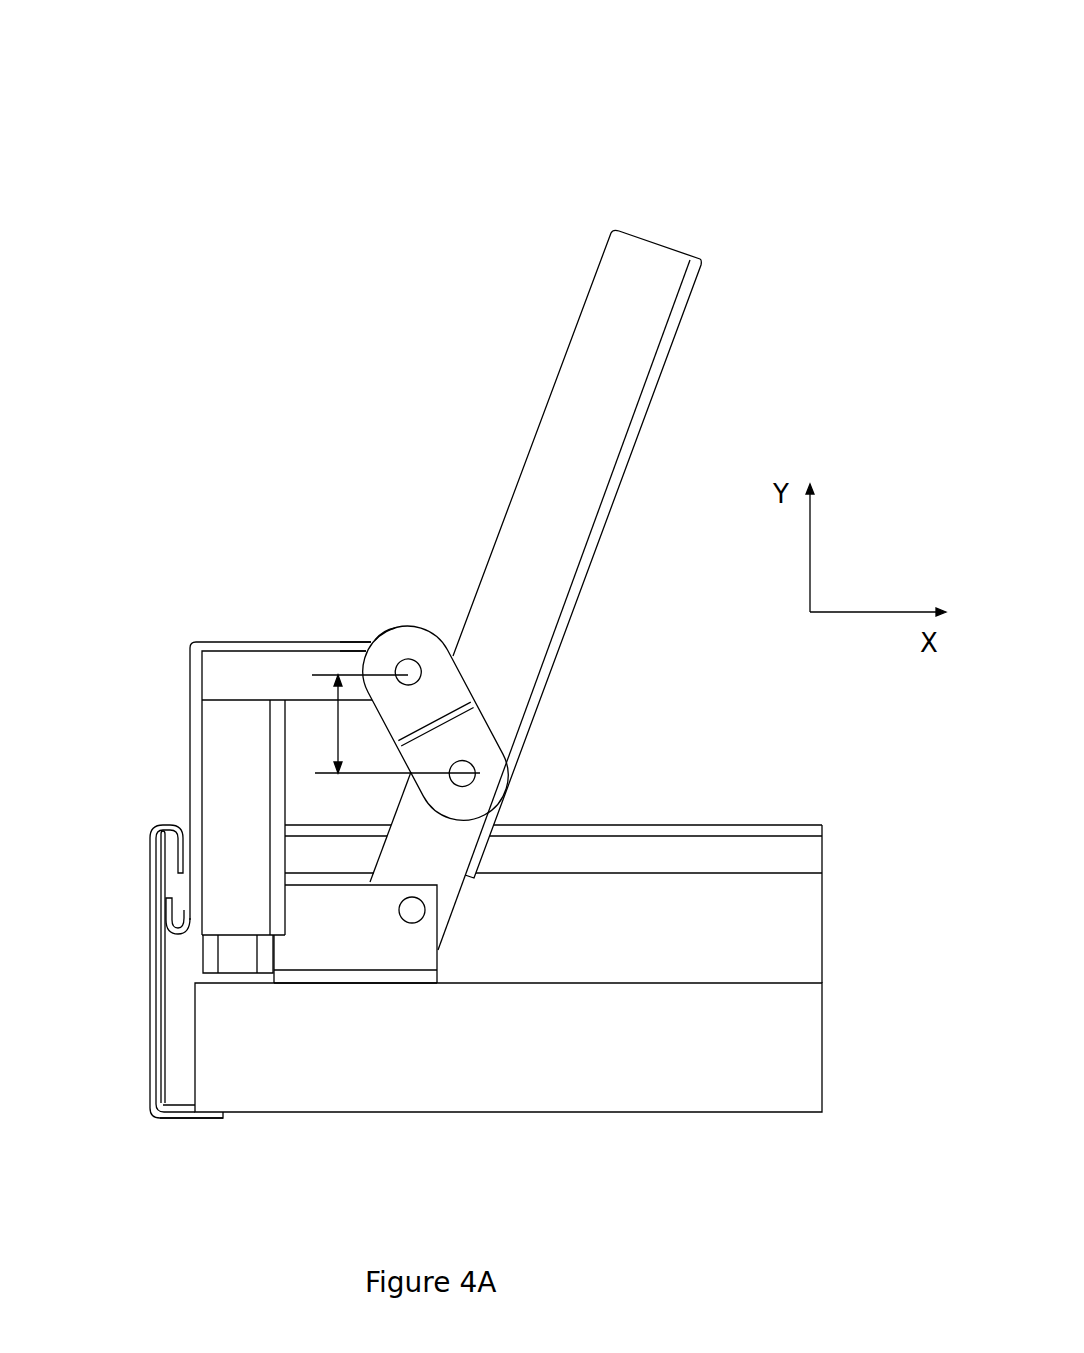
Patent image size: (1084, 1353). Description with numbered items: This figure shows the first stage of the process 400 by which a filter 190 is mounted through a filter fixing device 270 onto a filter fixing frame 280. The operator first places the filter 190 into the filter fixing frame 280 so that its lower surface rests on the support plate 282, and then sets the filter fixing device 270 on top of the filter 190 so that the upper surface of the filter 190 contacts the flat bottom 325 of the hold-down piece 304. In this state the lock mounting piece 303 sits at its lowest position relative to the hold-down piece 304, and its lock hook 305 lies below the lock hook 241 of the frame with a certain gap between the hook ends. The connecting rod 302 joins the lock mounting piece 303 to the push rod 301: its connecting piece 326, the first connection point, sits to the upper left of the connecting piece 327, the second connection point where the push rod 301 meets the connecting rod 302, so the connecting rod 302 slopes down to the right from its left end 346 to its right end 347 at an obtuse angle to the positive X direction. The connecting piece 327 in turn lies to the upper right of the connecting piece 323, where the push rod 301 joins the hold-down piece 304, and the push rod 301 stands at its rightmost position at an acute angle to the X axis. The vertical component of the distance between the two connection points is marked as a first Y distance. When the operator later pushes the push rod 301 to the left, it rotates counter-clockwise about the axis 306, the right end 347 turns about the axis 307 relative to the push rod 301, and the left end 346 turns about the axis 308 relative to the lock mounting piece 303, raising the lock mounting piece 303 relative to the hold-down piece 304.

The process 400 is at (812, 93).
The filter fixing device 270 is at (259, 269).
The filter 190 is at (375, 1097).
The filter fixing frame 280 is at (150, 1066).
The support plate 282 is at (188, 1122).
The lock hook 241 is at (163, 828).
The push rod 301 is at (562, 492).
The connecting rod 302 is at (440, 677).
The lock mounting piece 303 is at (242, 673).
The hold-down piece 304 is at (422, 960).
The lock hook 305 is at (172, 906).
The axis 306 is at (412, 910).
The axis 307 is at (477, 771).
The axis 308 is at (417, 658).
The connecting piece 323 is at (412, 906).
The flat bottom 325 is at (440, 983).
The connecting piece 326 is at (383, 648).
The connecting piece 327 is at (465, 778).
The left end 346 is at (363, 650).
The right end 347 is at (467, 738).